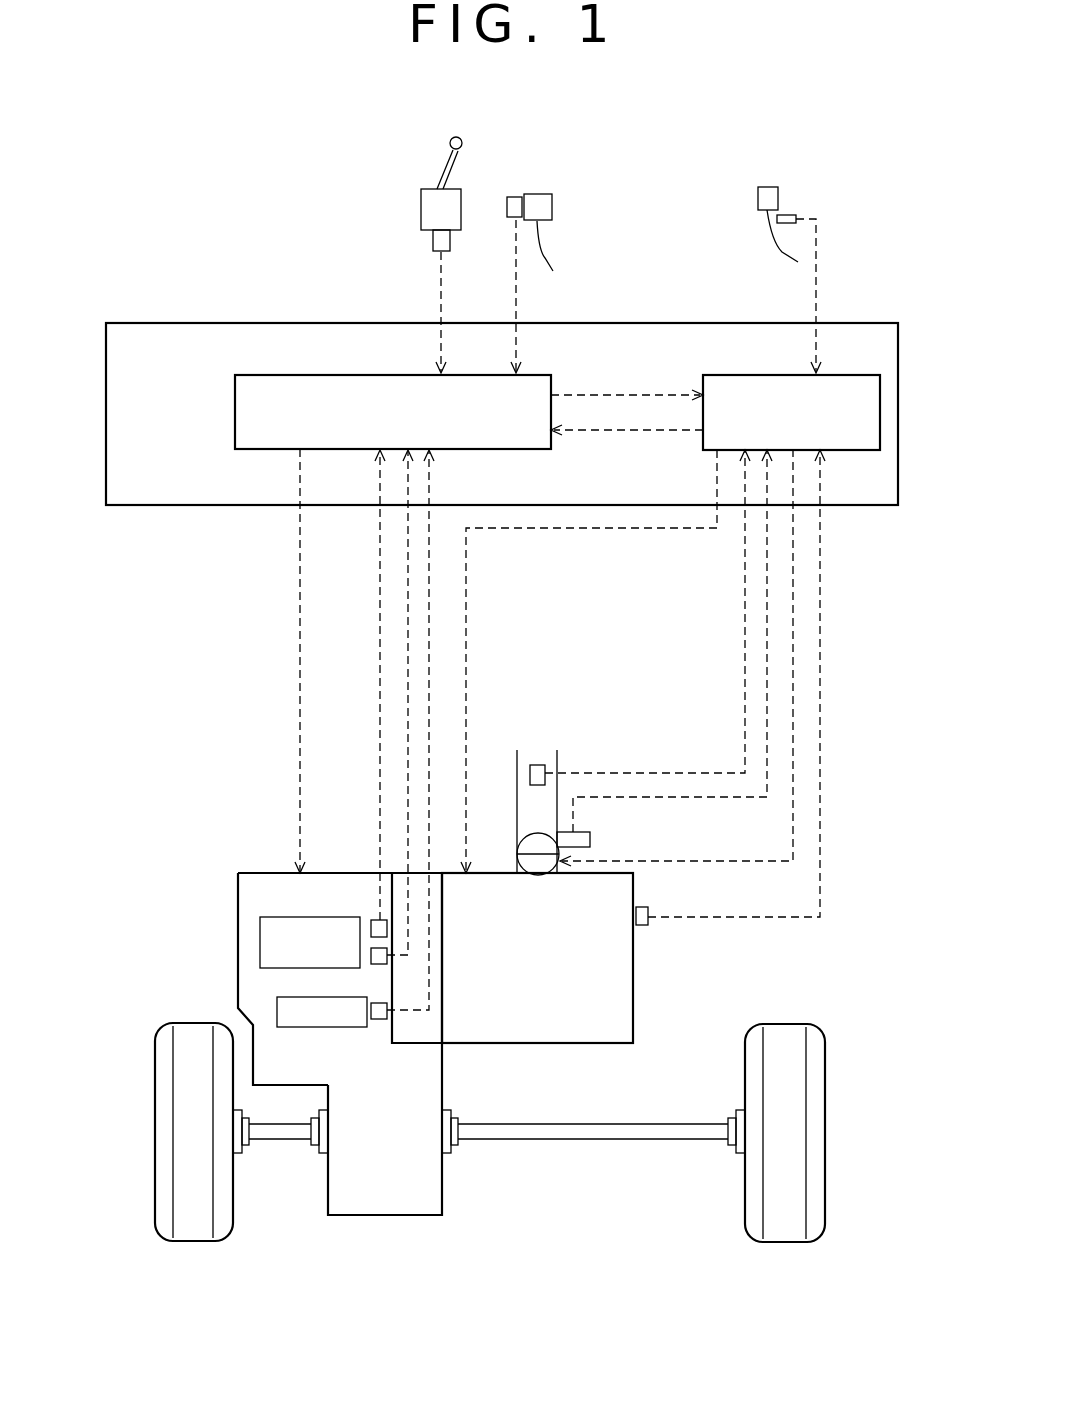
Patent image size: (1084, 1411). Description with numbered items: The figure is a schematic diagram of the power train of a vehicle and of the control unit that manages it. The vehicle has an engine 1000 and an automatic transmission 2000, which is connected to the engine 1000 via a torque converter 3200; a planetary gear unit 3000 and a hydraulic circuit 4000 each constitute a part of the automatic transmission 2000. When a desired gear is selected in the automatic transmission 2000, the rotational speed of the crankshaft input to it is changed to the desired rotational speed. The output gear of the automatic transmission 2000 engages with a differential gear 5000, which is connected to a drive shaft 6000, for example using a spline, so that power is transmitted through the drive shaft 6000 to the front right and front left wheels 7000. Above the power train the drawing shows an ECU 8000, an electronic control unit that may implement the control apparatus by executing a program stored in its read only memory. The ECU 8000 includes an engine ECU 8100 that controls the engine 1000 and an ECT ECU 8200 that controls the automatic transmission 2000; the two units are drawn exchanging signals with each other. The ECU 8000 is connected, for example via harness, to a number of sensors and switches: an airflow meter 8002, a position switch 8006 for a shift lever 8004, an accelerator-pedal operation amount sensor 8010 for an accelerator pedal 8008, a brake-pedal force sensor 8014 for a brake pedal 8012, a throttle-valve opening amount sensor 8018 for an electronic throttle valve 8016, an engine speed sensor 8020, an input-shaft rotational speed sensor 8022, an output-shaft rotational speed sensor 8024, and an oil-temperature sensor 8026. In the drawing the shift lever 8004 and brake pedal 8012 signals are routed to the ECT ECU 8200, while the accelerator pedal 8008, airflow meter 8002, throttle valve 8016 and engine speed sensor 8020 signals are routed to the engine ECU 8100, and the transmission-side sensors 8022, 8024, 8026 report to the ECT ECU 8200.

The engine 1000 is at (612, 1043).
The automatic transmission 2000 is at (258, 871).
The planetary gear unit 3000 is at (260, 940).
The torque converter 3200 is at (417, 1045).
The hydraulic circuit 4000 is at (312, 1027).
The differential gear 5000 is at (383, 1215).
The drive shaft 6000 is at (284, 1141).
The front wheels 7000 is at (185, 1241).
The ECU 8000 is at (130, 323).
The airflow meter 8002 is at (540, 765).
The shift lever 8004 is at (437, 180).
The position switch 8006 is at (433, 238).
The accelerator pedal 8008 is at (770, 233).
The accelerator-pedal operation amount sensor 8010 is at (787, 214).
The brake pedal 8012 is at (545, 234).
The brake-pedal force sensor 8014 is at (518, 197).
The electronic throttle valve 8016 is at (517, 845).
The throttle-valve opening amount sensor 8018 is at (590, 842).
The engine speed sensor 8020 is at (640, 928).
The input-shaft rotational speed sensor 8022 is at (371, 925).
The output-shaft rotational speed sensor 8024 is at (375, 964).
The oil-temperature sensor 8026 is at (379, 1019).
The engine ECU 8100 is at (855, 375).
The ECT ECU 8200 is at (276, 375).